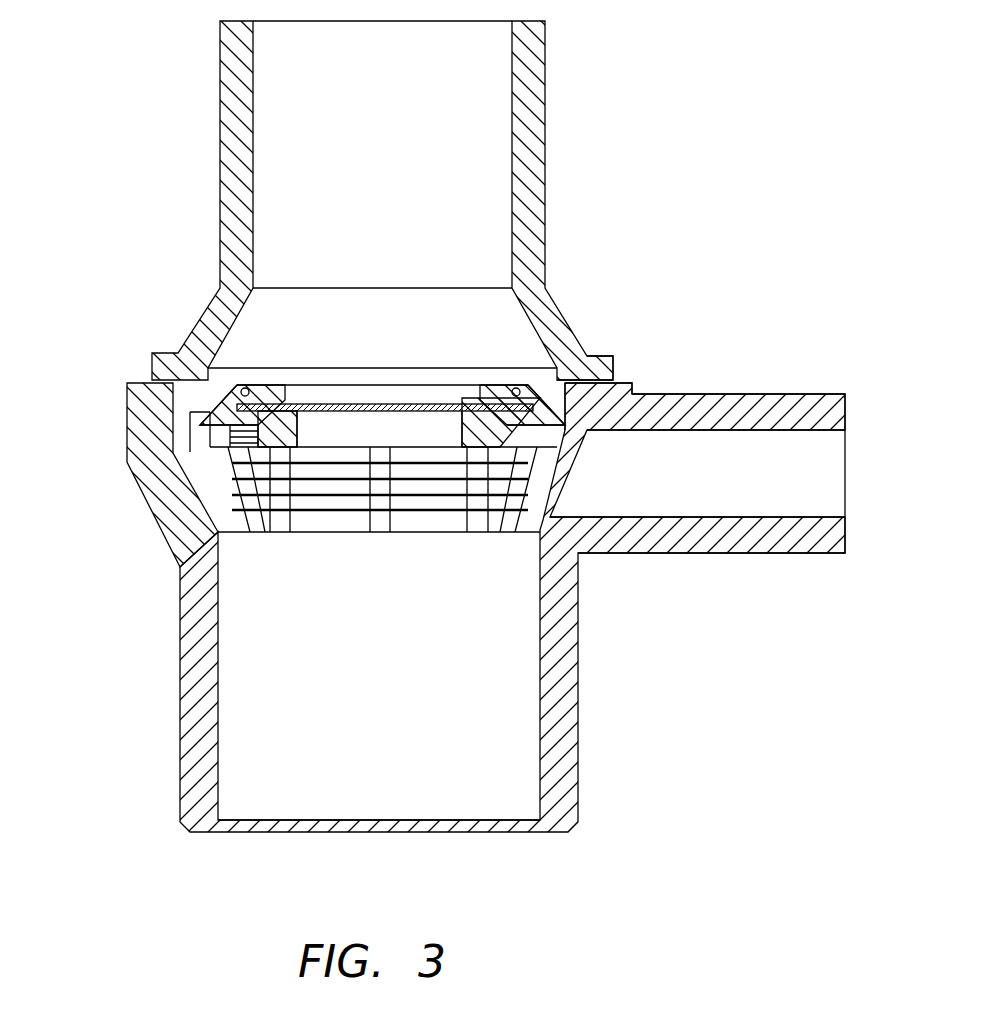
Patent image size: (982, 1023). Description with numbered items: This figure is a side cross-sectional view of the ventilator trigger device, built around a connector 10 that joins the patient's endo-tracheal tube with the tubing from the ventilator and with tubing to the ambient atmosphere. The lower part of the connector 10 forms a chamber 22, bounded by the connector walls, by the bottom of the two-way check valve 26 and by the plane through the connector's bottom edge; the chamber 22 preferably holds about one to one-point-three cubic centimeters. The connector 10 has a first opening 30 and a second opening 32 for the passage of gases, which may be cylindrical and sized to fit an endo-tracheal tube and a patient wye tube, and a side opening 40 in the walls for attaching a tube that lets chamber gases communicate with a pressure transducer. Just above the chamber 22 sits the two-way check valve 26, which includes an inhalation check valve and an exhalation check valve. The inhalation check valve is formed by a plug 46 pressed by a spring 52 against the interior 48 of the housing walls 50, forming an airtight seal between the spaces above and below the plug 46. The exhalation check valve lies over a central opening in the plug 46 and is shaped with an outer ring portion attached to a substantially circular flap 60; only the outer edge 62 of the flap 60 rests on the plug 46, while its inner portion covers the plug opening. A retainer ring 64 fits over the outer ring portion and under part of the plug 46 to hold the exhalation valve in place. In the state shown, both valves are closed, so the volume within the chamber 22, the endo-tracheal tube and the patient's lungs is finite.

The connector 10 is at (112, 194).
The chamber 22 is at (247, 608).
The two-way check valve 26 is at (270, 433).
The first opening 30 is at (432, 533).
The second opening 32 is at (430, 800).
The opening 40 is at (818, 502).
The plug 46 is at (567, 415).
The interior 48 is at (585, 355).
The walls 50 is at (218, 172).
The spring 52 is at (238, 515).
The substantially circular flap 60 is at (356, 405).
The outer edge 62 is at (472, 388).
The retainer ring 64 is at (513, 388).